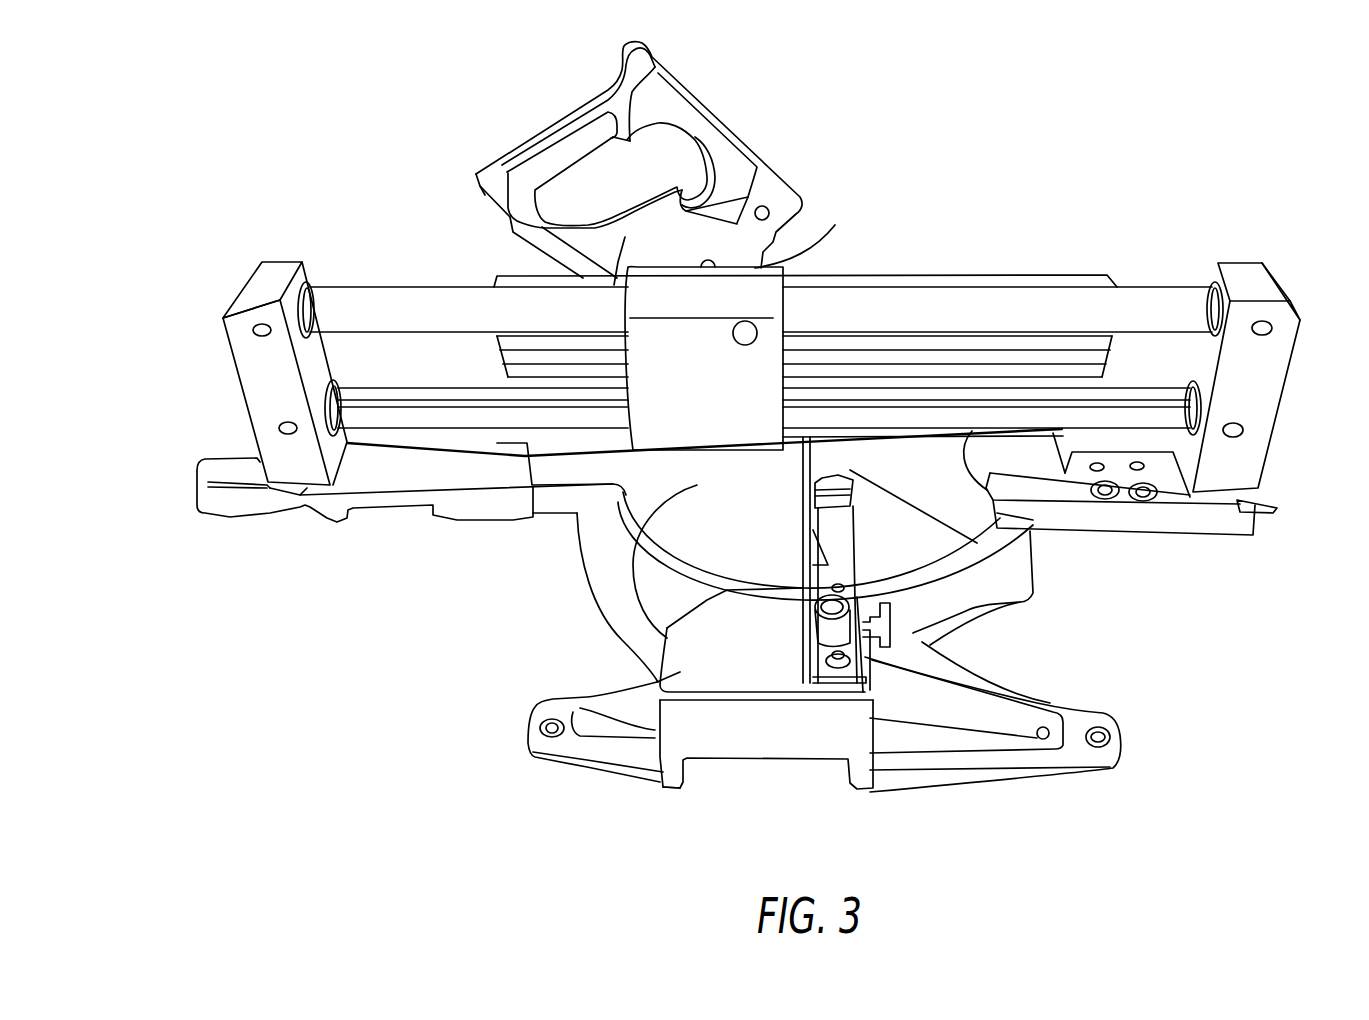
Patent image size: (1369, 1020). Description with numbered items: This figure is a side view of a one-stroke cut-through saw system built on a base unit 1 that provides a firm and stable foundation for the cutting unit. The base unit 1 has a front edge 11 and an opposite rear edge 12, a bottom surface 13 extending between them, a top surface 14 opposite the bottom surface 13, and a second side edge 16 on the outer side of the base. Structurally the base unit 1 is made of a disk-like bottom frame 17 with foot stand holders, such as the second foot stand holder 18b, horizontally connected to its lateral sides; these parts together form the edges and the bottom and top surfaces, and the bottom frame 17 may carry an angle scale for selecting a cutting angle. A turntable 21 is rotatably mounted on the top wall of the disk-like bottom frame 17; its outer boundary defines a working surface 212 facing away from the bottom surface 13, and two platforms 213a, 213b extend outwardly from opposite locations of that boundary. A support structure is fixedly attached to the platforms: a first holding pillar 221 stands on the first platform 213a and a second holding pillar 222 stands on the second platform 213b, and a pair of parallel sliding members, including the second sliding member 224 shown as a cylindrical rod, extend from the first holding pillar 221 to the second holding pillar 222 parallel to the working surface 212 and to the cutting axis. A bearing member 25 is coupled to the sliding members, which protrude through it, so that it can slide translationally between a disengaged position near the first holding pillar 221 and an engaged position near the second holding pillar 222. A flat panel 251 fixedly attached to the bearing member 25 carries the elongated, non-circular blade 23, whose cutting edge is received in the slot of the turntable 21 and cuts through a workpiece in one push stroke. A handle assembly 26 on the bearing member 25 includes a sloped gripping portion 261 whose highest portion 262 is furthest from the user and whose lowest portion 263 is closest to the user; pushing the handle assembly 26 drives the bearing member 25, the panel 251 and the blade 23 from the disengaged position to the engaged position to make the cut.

The base unit 1 is at (600, 557).
The front edge 11 is at (530, 732).
The rear edge 12 is at (1112, 758).
The bottom surface 13 is at (705, 760).
The top surface 14 is at (723, 658).
The second side edge 16 is at (913, 777).
The disk-like bottom frame 17 is at (975, 607).
The second foot stand holder 18b is at (661, 790).
The turntable 21 is at (592, 532).
The working surface 212 is at (665, 620).
The first platform 213a is at (1228, 518).
The second platform 213b is at (358, 495).
The first holding pillar 221 is at (255, 293).
The second holding pillar 222 is at (1248, 288).
The second sliding member 224 is at (1145, 303).
The elongated blade 23 is at (524, 444).
The bearing member 25 is at (748, 292).
The flat panel 251 is at (514, 356).
The handle assembly 26 is at (720, 123).
The gripping portion 261 is at (552, 131).
The highest portion 262 is at (638, 45).
The lowest portion 263 is at (474, 176).